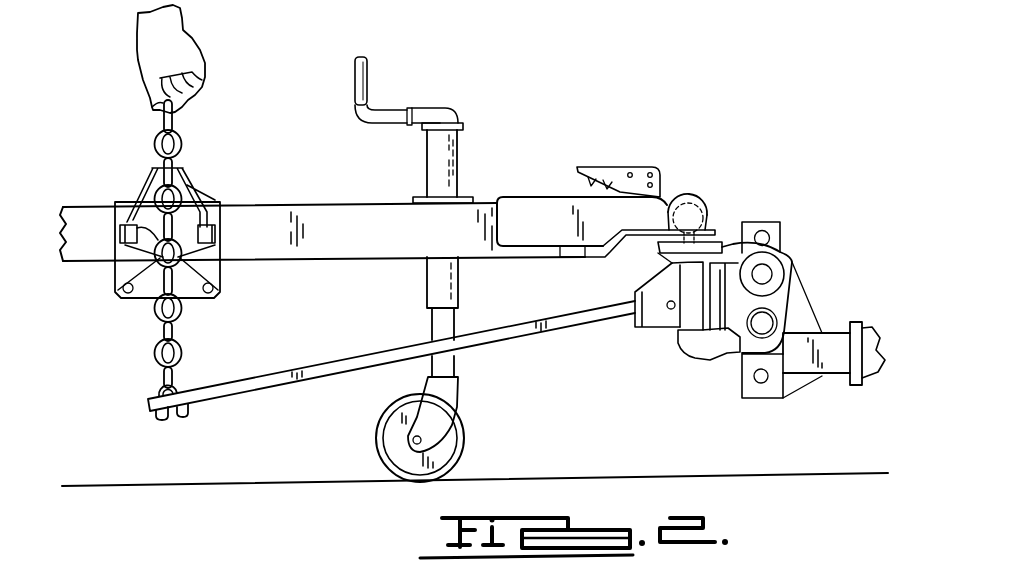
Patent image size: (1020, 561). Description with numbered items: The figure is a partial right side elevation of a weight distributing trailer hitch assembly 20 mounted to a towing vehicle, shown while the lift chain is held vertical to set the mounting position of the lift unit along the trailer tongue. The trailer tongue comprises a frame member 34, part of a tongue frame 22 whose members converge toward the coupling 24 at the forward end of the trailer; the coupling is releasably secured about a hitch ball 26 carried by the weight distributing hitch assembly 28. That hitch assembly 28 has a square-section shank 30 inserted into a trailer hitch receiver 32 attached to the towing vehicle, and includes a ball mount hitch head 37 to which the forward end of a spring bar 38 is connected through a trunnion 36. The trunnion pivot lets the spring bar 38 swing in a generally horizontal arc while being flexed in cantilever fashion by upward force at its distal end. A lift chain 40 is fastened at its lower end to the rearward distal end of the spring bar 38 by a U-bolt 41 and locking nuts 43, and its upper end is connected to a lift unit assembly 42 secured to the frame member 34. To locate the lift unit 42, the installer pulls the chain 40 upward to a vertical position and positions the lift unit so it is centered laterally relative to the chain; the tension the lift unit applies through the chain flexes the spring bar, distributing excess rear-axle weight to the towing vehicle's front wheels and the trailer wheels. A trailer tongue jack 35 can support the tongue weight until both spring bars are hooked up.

The weight distributing trailer hitch assembly 20 is at (704, 183).
The trailer tongue 22 is at (360, 203).
The coupling 24 is at (716, 207).
The hitch ball 26 is at (687, 200).
The weight distributing hitch assembly 28 is at (792, 263).
The shank 30 is at (812, 376).
The trailer hitch receiver 32 is at (875, 327).
The frame member 34 is at (272, 220).
The trailer tongue jack 35 is at (482, 162).
The trunnion 36 is at (655, 320).
The ball mount hitch head 37 is at (660, 254).
The spring bar 38 is at (549, 336).
The lift chain 40 is at (186, 345).
The U-bolt 41 is at (158, 392).
The lift unit assembly 42 is at (223, 192).
The locking nuts 43 is at (179, 420).